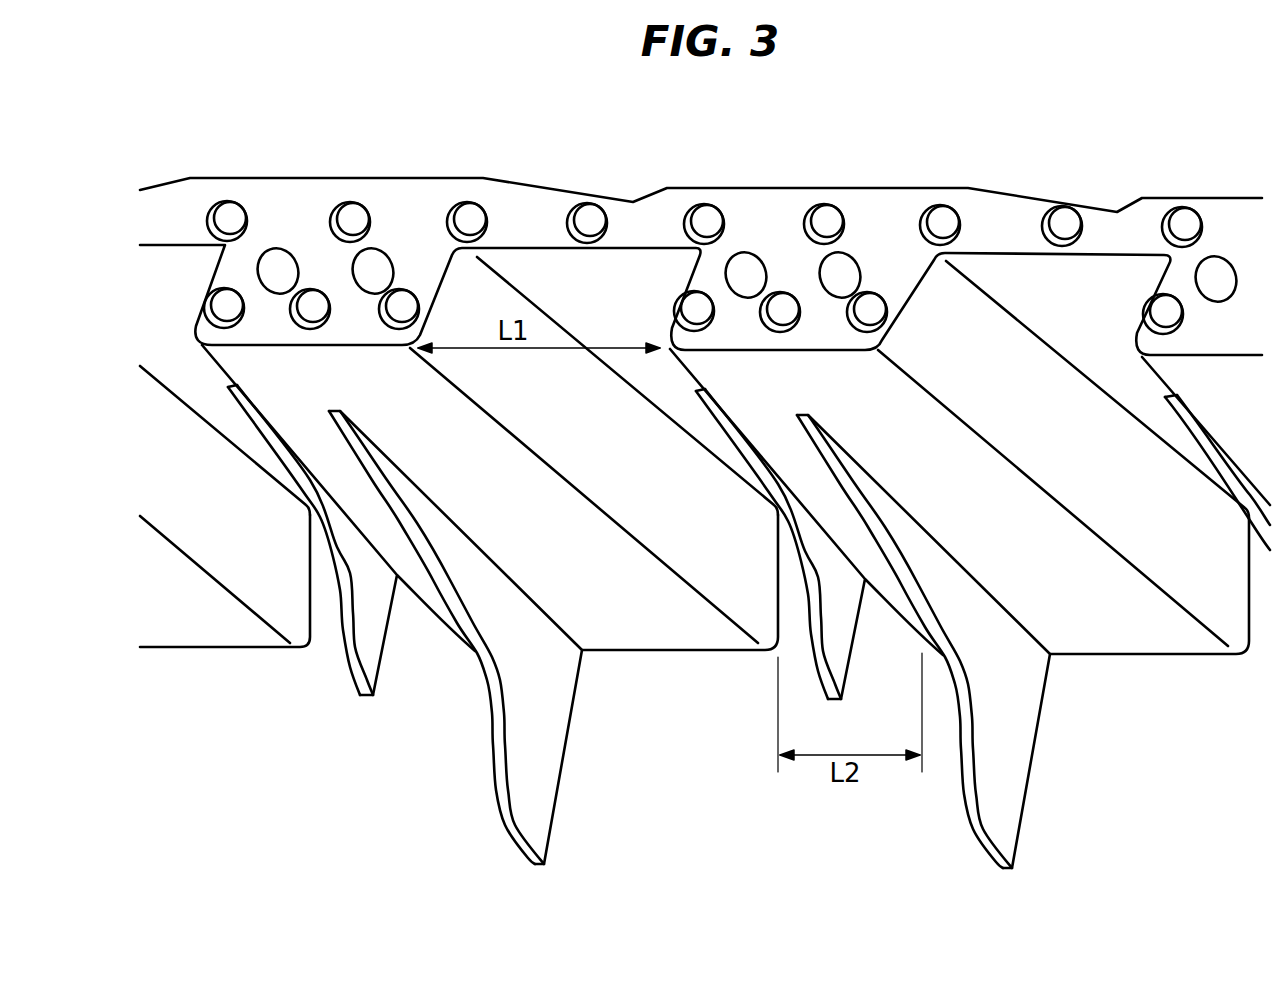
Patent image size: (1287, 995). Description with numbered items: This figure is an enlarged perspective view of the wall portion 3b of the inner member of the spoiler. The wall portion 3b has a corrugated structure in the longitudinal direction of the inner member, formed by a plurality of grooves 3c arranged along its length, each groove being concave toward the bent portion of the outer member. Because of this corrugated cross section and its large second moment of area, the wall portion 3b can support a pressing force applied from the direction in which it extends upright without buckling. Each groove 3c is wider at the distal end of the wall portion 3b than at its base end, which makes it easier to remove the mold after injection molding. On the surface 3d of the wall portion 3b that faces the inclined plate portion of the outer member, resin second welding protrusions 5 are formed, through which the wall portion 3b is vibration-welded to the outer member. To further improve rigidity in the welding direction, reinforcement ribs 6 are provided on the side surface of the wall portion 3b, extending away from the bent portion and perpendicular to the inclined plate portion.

The surface of the wall portion 3d is at (287, 215).
The grooves 3c is at (583, 280).
The second welding protrusions 5 is at (694, 220).
The wall portion 3b is at (627, 590).
The reinforcement ribs 6 is at (544, 755).